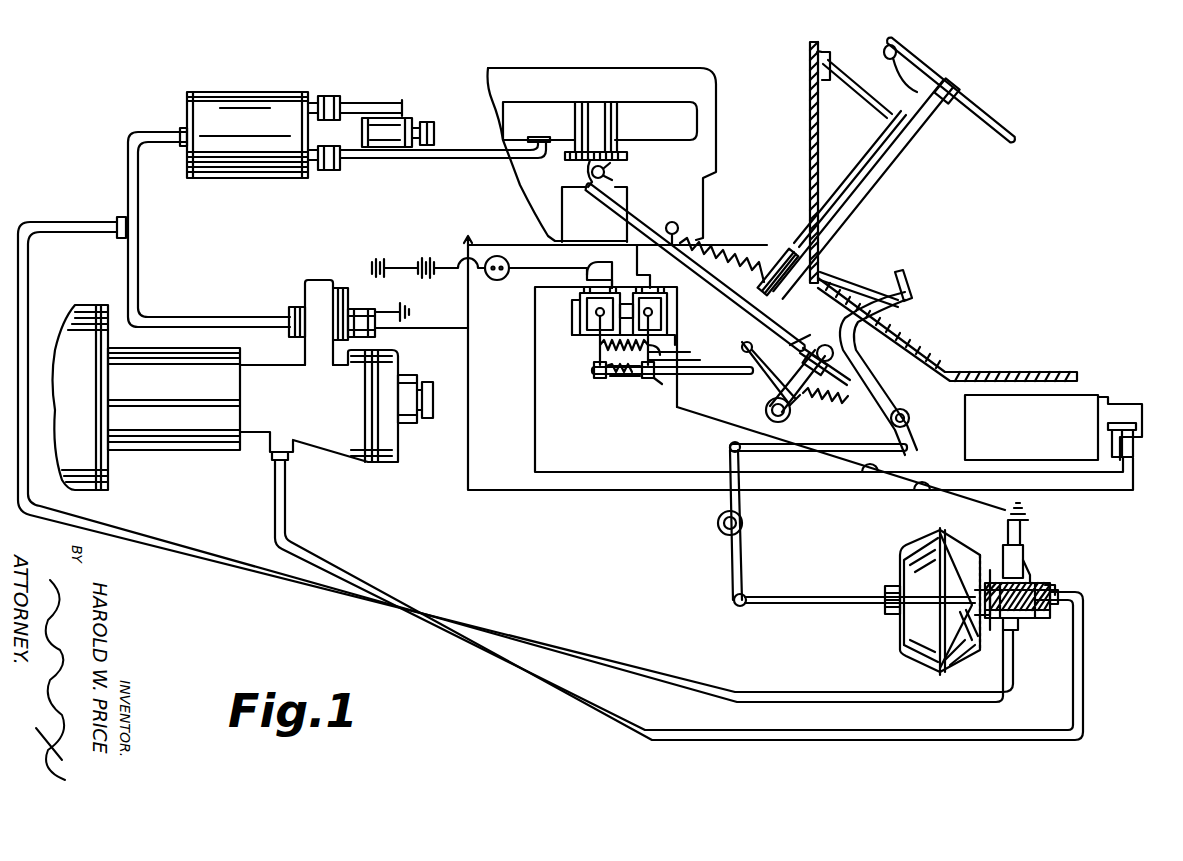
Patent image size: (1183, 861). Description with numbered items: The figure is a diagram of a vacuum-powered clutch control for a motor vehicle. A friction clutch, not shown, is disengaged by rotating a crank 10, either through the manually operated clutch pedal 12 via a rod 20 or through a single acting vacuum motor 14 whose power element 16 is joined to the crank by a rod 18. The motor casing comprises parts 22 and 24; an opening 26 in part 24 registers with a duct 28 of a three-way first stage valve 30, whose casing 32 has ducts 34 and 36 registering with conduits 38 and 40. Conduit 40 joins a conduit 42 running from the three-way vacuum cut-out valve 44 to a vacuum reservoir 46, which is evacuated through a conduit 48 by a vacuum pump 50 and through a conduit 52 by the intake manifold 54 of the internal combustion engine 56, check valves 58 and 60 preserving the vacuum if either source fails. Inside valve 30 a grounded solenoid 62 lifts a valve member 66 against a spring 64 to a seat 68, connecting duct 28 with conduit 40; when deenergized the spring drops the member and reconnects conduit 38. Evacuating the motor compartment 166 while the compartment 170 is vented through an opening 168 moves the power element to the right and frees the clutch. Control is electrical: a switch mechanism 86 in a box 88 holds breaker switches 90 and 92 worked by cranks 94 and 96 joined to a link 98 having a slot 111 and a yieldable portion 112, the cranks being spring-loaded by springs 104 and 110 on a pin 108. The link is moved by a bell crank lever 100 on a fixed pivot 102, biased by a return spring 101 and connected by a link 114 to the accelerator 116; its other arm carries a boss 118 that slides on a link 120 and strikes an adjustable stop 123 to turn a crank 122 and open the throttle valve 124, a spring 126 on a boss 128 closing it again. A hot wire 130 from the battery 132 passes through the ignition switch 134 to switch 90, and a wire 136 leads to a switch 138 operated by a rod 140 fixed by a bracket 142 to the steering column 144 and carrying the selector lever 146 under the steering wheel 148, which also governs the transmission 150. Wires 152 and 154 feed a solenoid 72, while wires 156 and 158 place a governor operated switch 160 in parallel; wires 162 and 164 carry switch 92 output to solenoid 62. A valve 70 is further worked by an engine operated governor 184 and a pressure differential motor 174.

The crank 10 is at (725, 572).
The clutch pedal 12 is at (892, 378).
The vacuum motor 14 is at (882, 637).
The power element 16 is at (950, 667).
The rod 18 is at (810, 604).
The rod 20 is at (850, 444).
The casing part 22 is at (936, 655).
The casing part 24 is at (950, 550).
The opening 26 is at (982, 565).
The duct 28 is at (984, 638).
The three-way first stage valve 30 is at (1060, 572).
The casing 32 is at (1027, 620).
The duct 34 is at (1060, 596).
The duct 36 is at (1016, 632).
The conduit 38 is at (515, 680).
The conduit 40 is at (170, 560).
The conduit 42 is at (134, 236).
The three-way vacuum cut-out valve 44 is at (313, 290).
The vacuum reservoir 46 is at (233, 180).
The conduit 48 is at (362, 102).
The vacuum pump 50 is at (408, 122).
The conduit 52 is at (402, 160).
The intake manifold 54 is at (668, 140).
The internal combustion engine 56 is at (727, 76).
The check valve 58 is at (330, 94).
The check valve 60 is at (331, 172).
The grounded solenoid 62 is at (1022, 555).
The spring 64 is at (1036, 562).
The valve member 66 is at (1055, 586).
The seat 68 is at (992, 592).
The valve 70 is at (318, 460).
The solenoid 72 is at (360, 311).
The switch mechanism 86 is at (570, 346).
The box 88 is at (580, 303).
The breaker switch 90 is at (586, 316).
The breaker switch 92 is at (667, 303).
The crank 94 is at (598, 344).
The crank 96 is at (660, 344).
The link 98 is at (682, 375).
The bell crank lever 100 is at (758, 388).
The return spring 101 is at (840, 406).
The fixed pivot 102 is at (790, 419).
The spring 104 is at (594, 370).
The pin 108 is at (631, 319).
The spring 110 is at (672, 352).
The slot 111 is at (658, 380).
The yieldable portion 112 is at (616, 378).
The link 114 is at (790, 330).
The accelerator 116 is at (870, 280).
The boss 118 is at (828, 364).
The link 120 is at (724, 300).
The crank 122 is at (590, 173).
The stop 123 is at (820, 348).
The throttle valve 124 is at (614, 178).
The spring 126 is at (722, 248).
The boss 128 is at (672, 222).
The hot wire 130 is at (521, 272).
The battery 132 is at (420, 256).
The ignition switch 134 is at (490, 279).
The wire 136 is at (645, 270).
The switch 138 is at (774, 252).
The rod 140 is at (845, 177).
The bracket 142 is at (854, 88).
The steering column 144 is at (868, 190).
The selector lever 146 is at (884, 56).
The steering wheel 148 is at (995, 118).
The transmission 150 is at (1076, 396).
The wire 152 is at (468, 236).
The wire 154 is at (410, 320).
The wire 156 is at (540, 460).
The wire 158 is at (470, 478).
The governor operated switch 160 is at (1132, 455).
The wire 162 is at (636, 276).
The wire 164 is at (712, 418).
The motor compartment 166 is at (976, 650).
The opening 168 is at (900, 563).
The compartment 170 is at (905, 640).
The pressure differential operated motor 174 is at (395, 446).
The engine operated governor 184 is at (178, 452).